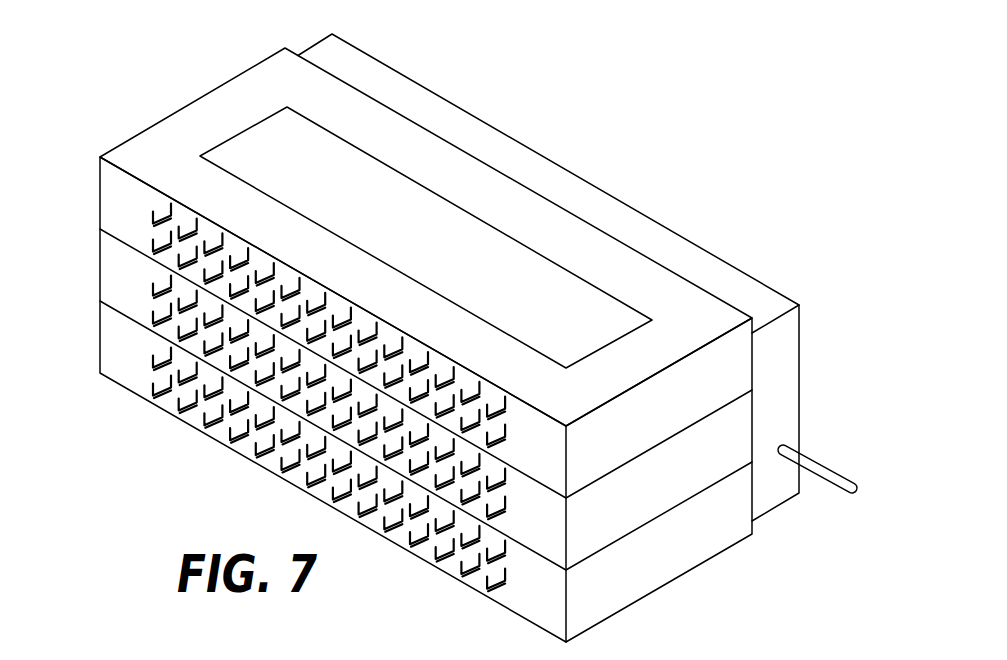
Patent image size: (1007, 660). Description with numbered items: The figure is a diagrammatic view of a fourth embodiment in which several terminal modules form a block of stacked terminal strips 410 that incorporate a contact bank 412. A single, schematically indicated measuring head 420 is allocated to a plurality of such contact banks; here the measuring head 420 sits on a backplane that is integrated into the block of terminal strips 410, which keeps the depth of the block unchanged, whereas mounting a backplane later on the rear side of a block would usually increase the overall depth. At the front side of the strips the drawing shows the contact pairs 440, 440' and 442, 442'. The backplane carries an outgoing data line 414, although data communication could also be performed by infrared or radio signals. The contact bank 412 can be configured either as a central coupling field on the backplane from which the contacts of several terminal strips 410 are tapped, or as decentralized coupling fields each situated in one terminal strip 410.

The terminal strip 410 is at (108, 177).
The contact bank 412 is at (267, 130).
The outgoing data line 414 is at (841, 481).
The measuring head 420 is at (788, 346).
The contact pair 440 is at (102, 203).
The contact pair 440' is at (99, 232).
The contact pair 442 is at (129, 163).
The contact pair 442' is at (111, 280).